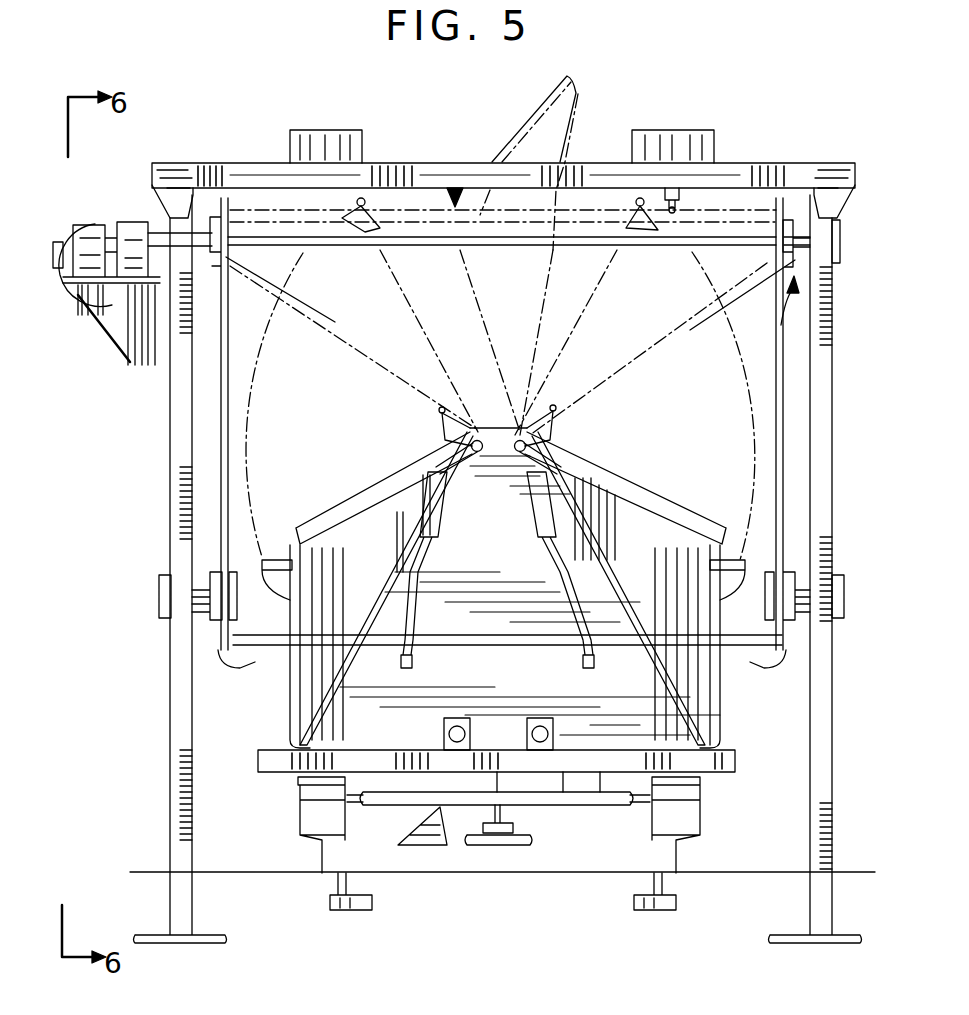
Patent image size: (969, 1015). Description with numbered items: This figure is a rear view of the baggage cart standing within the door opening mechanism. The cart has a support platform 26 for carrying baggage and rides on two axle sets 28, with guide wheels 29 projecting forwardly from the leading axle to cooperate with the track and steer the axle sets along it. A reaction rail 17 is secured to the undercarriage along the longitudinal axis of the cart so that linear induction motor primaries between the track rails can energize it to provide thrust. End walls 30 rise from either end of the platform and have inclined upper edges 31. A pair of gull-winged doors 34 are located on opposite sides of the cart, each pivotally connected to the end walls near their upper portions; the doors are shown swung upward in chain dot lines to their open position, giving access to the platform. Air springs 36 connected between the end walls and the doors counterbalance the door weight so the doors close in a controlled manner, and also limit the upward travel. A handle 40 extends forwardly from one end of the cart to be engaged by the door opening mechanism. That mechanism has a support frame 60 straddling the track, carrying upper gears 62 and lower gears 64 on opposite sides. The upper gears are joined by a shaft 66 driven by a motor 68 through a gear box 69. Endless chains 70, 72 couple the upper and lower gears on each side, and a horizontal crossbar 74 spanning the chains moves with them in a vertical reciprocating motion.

The reaction rail 17 is at (507, 846).
The support platform 26 is at (727, 748).
The axle sets 28 is at (296, 852).
The guide wheels 29 is at (362, 912).
The end walls 30 is at (560, 455).
The inclined upper edges 31 is at (385, 586).
The gull-winged doors 34 is at (340, 505).
The air springs 36 is at (443, 546).
The handle 40 is at (271, 560).
The support frame 60 is at (835, 520).
The upper gears 62 is at (778, 323).
The lower gears 64 is at (200, 621).
The shaft 66 is at (607, 235).
The motor 68 is at (92, 236).
The gear box 69 is at (100, 333).
The chain 70 is at (783, 440).
The chain 72 is at (229, 376).
The horizontal crossbar 74 is at (436, 213).